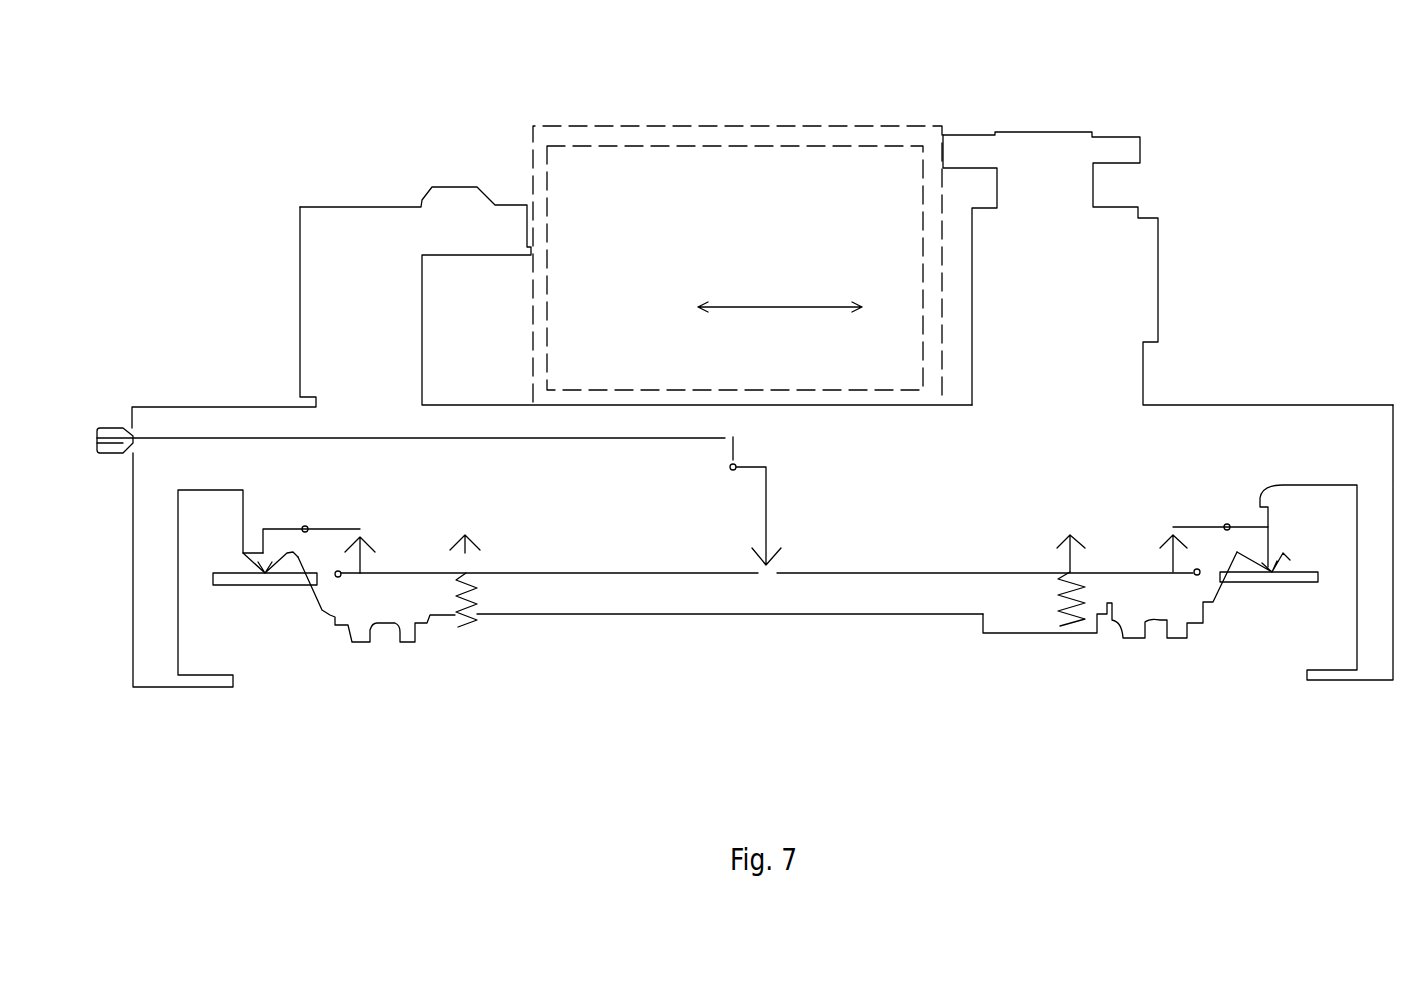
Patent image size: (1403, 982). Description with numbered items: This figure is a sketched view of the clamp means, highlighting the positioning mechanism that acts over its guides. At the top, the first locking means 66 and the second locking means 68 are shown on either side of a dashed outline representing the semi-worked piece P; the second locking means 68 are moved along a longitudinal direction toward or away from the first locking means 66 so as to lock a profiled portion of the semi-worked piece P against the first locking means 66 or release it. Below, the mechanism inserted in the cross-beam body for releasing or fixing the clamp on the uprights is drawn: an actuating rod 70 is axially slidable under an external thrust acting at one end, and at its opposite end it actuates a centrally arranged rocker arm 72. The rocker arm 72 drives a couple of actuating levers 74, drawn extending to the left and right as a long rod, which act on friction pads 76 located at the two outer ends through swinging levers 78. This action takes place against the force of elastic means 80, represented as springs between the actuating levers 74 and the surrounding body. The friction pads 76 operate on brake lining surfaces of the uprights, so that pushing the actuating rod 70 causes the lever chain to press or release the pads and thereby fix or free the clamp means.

The first locking means 66 is at (366, 240).
The second locking means 68 is at (1143, 233).
The actuating rod 70 is at (252, 430).
The rocker arm 72 is at (767, 497).
The actuating levers 74 is at (575, 574).
The friction pads 76 is at (267, 580).
The swinging levers 78 is at (328, 528).
The elastic means 80 is at (480, 605).
The semi-worked piece P is at (803, 135).